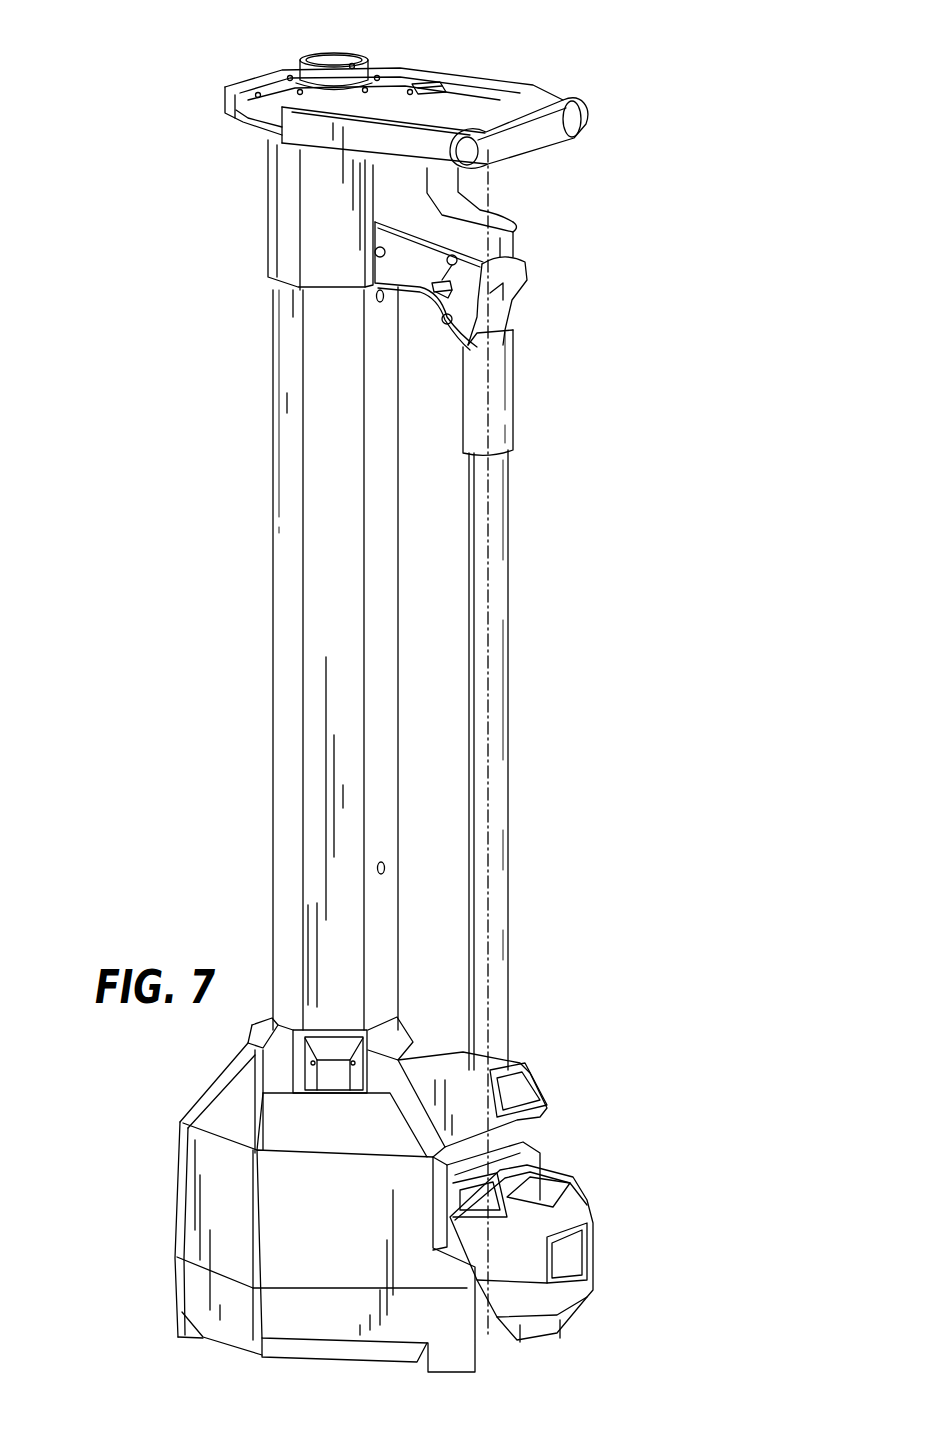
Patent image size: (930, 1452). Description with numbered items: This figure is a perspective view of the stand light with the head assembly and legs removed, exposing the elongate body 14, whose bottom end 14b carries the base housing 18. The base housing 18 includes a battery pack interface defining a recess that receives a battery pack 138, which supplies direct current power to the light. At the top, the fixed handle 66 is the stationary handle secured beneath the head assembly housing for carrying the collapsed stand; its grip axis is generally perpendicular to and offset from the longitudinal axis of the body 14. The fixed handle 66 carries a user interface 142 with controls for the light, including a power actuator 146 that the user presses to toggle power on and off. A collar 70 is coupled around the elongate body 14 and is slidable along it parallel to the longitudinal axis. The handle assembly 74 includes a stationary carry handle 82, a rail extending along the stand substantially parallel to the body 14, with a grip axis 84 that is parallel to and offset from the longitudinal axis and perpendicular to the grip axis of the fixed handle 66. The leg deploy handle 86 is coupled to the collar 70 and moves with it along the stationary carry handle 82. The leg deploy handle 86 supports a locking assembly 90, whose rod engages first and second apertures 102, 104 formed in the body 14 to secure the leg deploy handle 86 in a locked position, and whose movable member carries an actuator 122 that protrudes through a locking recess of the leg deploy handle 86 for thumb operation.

The elongate body 14 is at (287, 620).
The second, bottom end 14b is at (360, 1194).
The base housing 18 is at (212, 1203).
The fixed handle 66 is at (553, 113).
The collar 70 is at (287, 218).
The handle assembly 74 is at (448, 89).
The stationary carry handle 82 is at (508, 618).
The grip axis 84 is at (490, 780).
The leg deploy handle 86 is at (513, 400).
The locking assembly 90 is at (413, 259).
The first aperture 102 is at (379, 303).
The second aperture 104 is at (377, 872).
The actuator 122 is at (442, 282).
The battery pack 138 is at (543, 1193).
The user interface 142 is at (394, 71).
The power actuator 146 is at (428, 83).